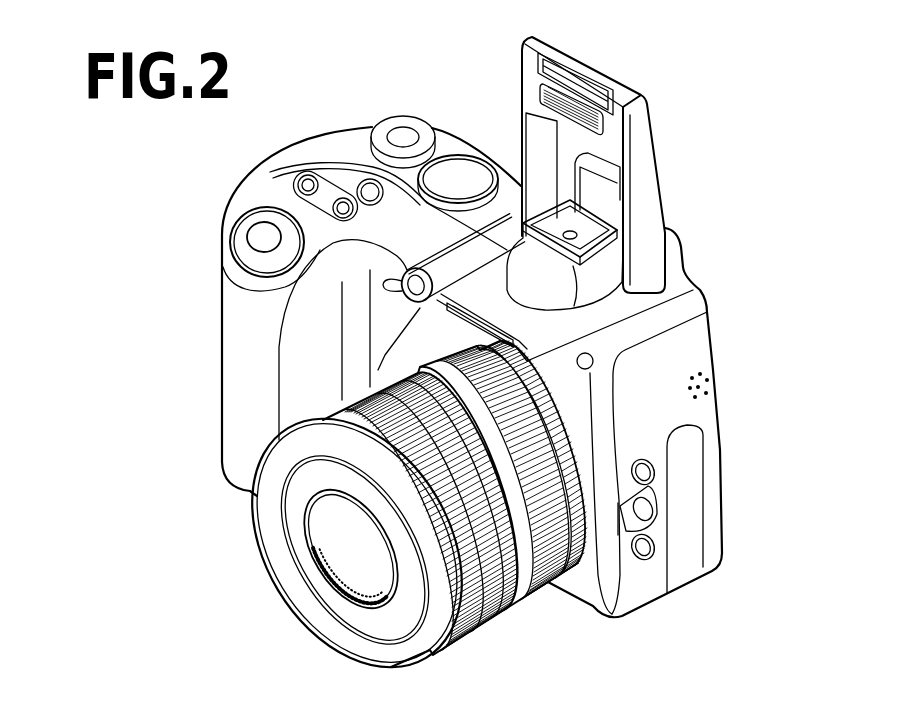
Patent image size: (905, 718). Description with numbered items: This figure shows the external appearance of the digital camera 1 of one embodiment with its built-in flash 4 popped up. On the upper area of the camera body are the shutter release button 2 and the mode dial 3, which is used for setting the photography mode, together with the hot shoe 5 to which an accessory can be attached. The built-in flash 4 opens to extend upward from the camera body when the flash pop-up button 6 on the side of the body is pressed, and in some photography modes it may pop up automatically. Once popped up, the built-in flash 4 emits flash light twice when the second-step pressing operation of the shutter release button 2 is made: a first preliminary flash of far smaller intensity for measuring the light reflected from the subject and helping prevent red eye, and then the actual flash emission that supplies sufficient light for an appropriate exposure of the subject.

The digital camera 1 is at (322, 63).
The shutter release button 2 is at (260, 237).
The mode dial 3 is at (457, 168).
The built-in flash 4 is at (522, 88).
The hot shoe 5 is at (603, 233).
The flash pop-up button 6 is at (594, 361).